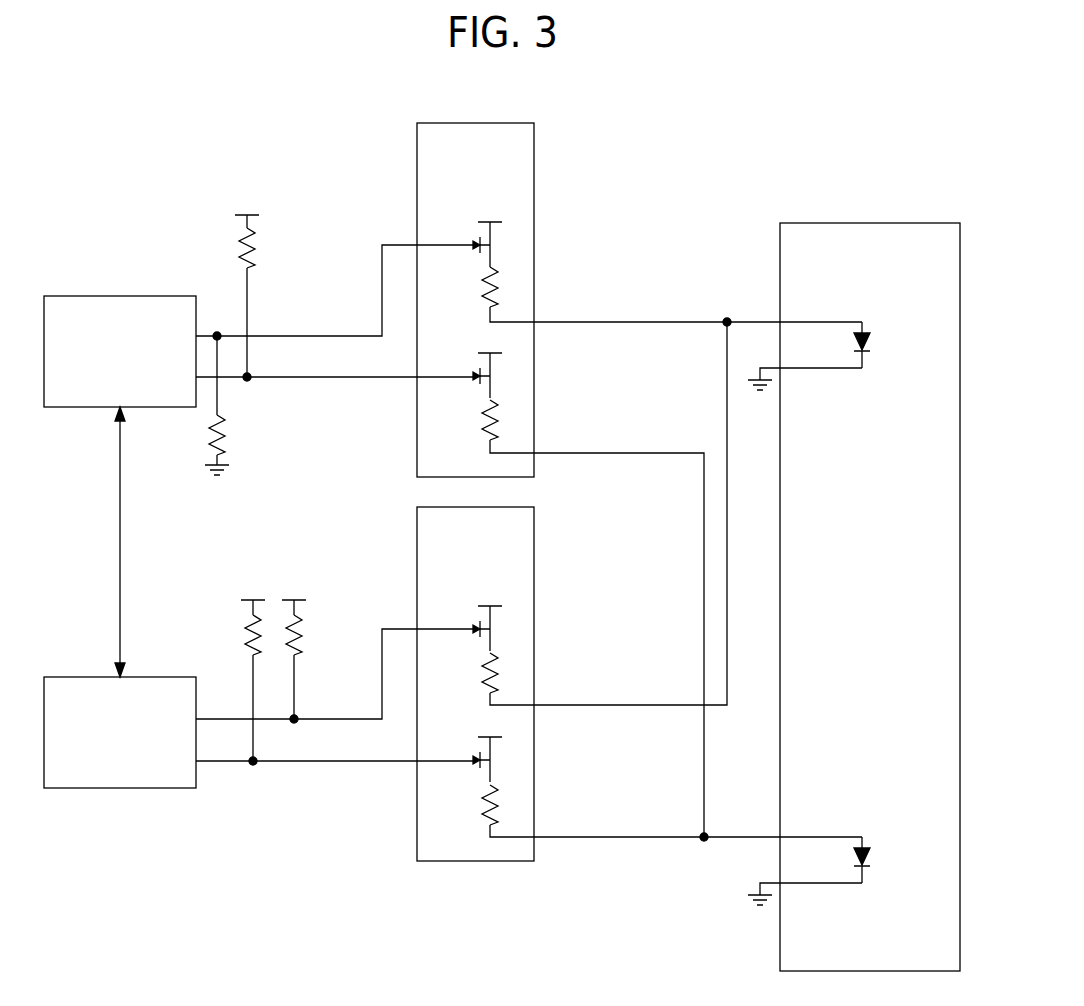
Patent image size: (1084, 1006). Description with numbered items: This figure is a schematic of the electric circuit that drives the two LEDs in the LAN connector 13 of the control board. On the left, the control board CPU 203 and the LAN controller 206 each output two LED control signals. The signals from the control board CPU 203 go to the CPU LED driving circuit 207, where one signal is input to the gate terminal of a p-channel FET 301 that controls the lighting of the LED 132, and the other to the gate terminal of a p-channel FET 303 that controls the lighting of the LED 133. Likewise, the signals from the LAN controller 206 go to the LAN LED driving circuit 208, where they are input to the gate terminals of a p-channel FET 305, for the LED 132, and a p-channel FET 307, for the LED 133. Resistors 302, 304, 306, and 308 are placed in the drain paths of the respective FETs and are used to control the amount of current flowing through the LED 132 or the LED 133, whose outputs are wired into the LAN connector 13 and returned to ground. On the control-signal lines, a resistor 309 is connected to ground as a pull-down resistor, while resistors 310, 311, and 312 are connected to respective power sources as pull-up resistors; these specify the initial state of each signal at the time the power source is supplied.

The LAN connector 13 is at (798, 222).
The LED 132 is at (885, 327).
The LED 133 is at (885, 843).
The control board CPU 203 is at (58, 296).
The LAN controller 206 is at (58, 677).
The CPU LED driving circuit 207 is at (535, 142).
The LAN LED driving circuit 208 is at (535, 522).
The p-channel FET 301 is at (493, 237).
The resistor 302 is at (498, 290).
The p-channel FET 303 is at (493, 368).
The resistor 304 is at (498, 418).
The p-channel FET 305 is at (493, 620).
The resistor 306 is at (498, 675).
The p-channel FET 307 is at (493, 750).
The resistor 308 is at (498, 805).
The resistor 309 is at (227, 433).
The resistor 310 is at (260, 248).
The resistor 311 is at (235, 647).
The resistor 312 is at (308, 637).